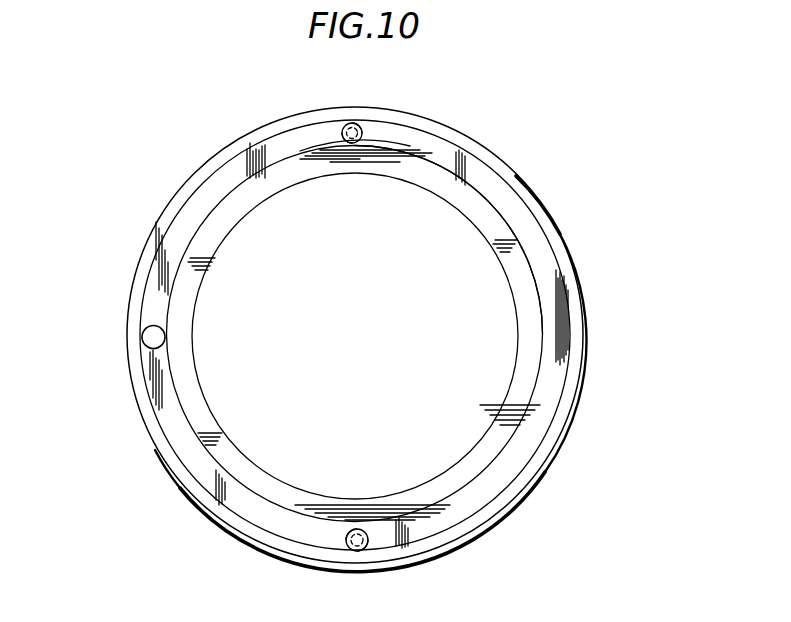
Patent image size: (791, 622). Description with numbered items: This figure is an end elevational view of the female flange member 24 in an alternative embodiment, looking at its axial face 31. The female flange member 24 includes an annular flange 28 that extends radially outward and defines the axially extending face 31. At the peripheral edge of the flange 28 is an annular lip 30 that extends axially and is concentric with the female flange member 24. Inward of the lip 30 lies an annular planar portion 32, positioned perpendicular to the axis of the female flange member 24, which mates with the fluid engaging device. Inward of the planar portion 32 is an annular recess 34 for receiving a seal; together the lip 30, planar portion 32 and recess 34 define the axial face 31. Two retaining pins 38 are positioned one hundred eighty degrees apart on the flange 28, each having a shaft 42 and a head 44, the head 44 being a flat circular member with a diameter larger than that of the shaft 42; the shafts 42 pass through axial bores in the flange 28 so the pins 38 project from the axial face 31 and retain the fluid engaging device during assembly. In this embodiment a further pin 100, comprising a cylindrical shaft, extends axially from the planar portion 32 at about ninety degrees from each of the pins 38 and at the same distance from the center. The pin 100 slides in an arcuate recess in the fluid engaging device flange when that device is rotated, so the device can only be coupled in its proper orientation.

The annular flange 28 is at (586, 294).
The annular lip 30 is at (584, 352).
The axial face 31 is at (535, 272).
The annular recess 34 is at (457, 197).
The female flange member 24 is at (518, 318).
The retaining pin 38 is at (349, 123).
The head 44 is at (363, 136).
The shaft 42 is at (363, 130).
The annular planar portion 32 is at (372, 142).
The pin 100 is at (142, 341).